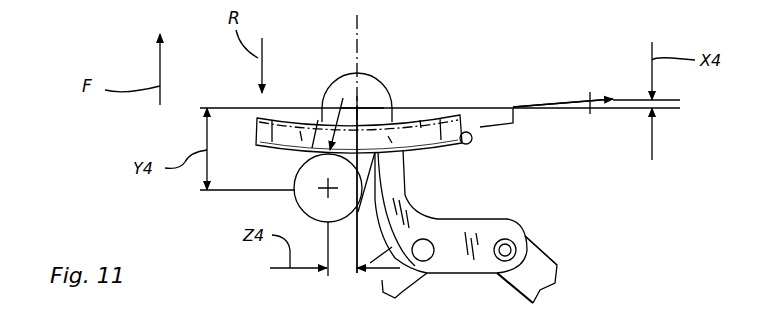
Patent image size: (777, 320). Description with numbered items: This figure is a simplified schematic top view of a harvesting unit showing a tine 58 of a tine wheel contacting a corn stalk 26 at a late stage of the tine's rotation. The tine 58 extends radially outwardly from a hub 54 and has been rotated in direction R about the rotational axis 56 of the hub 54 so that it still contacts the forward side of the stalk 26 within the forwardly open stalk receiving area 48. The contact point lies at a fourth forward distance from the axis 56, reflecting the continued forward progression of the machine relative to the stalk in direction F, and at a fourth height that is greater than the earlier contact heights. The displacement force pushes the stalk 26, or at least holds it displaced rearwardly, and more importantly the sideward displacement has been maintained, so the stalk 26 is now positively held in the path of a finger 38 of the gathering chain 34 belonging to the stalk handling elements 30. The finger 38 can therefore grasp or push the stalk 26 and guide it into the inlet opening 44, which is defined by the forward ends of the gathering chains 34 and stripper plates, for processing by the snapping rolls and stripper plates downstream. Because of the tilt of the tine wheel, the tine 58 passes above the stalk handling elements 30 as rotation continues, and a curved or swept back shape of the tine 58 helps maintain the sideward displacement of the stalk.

The stalk receiving area 48 is at (232, 92).
The tine 58 is at (288, 118).
The hub 54 is at (592, 104).
The rotational axis 56 is at (563, 103).
The stalk 26 is at (296, 200).
The finger 38 is at (415, 177).
The stalk handling elements 30 is at (533, 240).
The gathering chain 34 is at (541, 250).
The inlet opening 44 is at (236, 293).